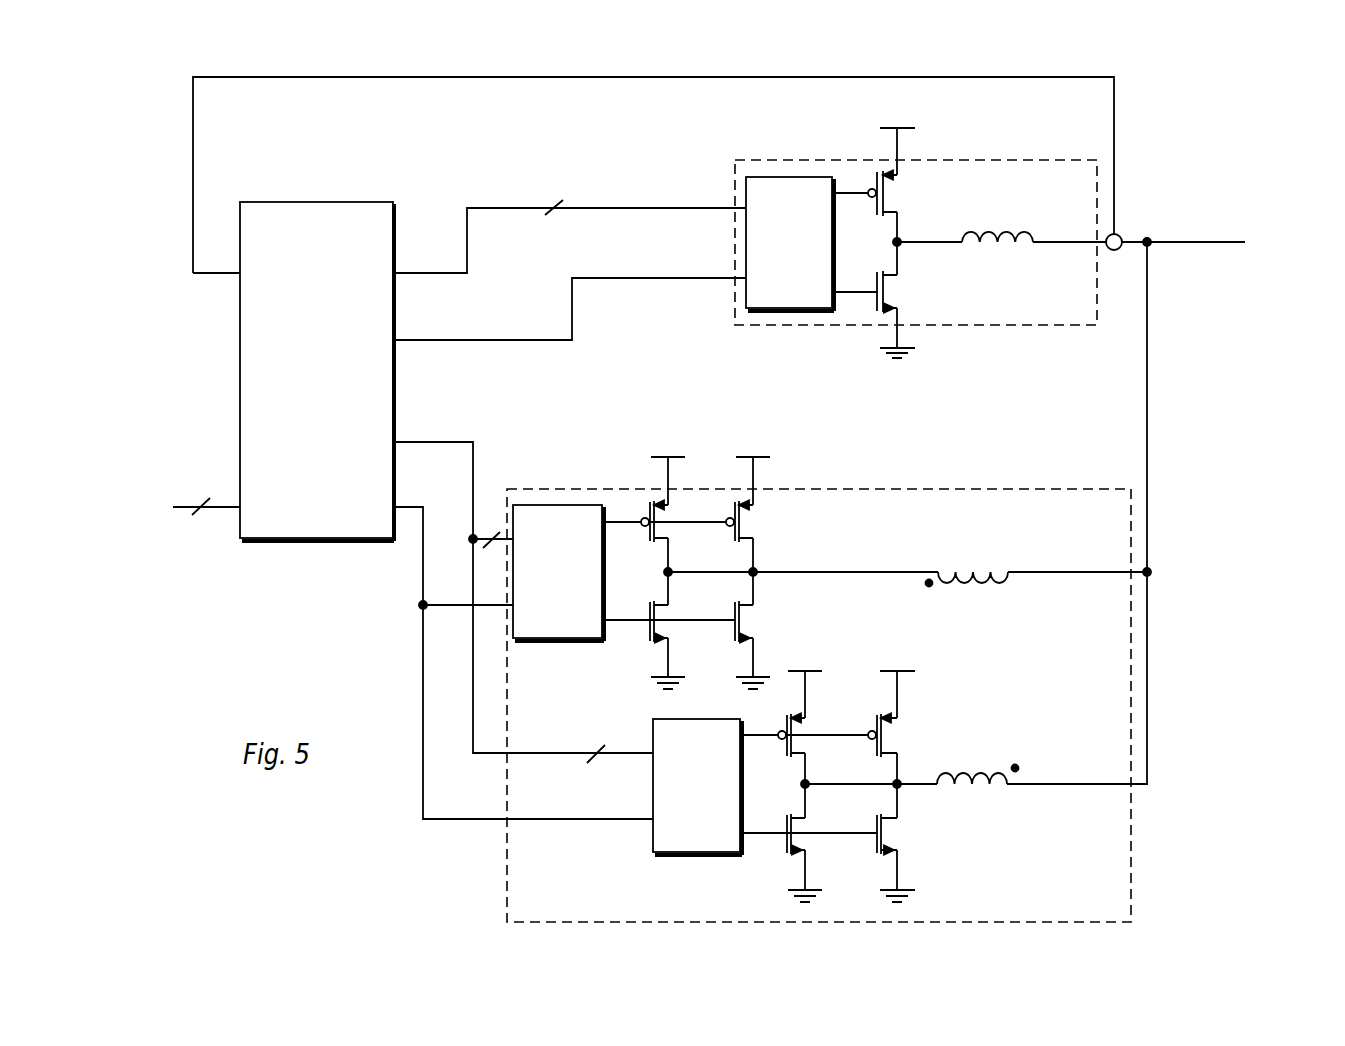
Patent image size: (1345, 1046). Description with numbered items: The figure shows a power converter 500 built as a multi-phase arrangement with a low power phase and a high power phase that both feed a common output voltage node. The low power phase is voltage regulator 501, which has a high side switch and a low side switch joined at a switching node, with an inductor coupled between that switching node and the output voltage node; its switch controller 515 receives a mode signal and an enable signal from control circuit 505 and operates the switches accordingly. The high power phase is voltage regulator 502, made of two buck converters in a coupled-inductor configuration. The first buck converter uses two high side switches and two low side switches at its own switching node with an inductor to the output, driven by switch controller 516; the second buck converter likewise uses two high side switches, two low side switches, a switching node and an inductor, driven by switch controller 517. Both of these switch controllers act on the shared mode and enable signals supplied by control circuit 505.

The power converter 500 is at (737, 35).
The voltage regulator 501 is at (916, 230).
The voltage regulator 502 is at (829, 676).
The control circuit 505 is at (317, 371).
The switch controller 515 is at (790, 244).
The switch controller 516 is at (558, 573).
The switch controller 517 is at (697, 787).